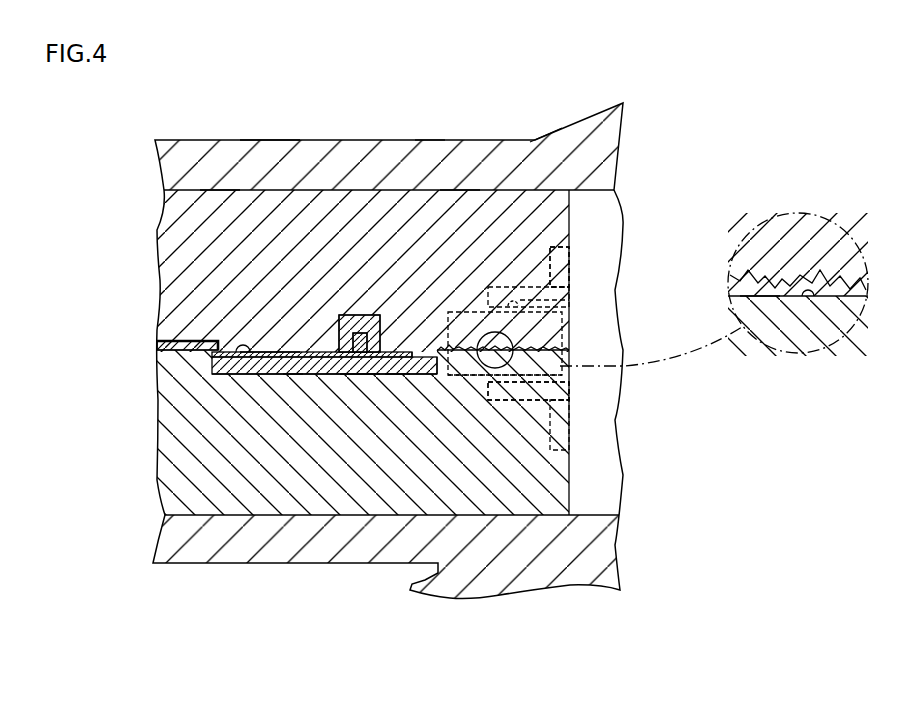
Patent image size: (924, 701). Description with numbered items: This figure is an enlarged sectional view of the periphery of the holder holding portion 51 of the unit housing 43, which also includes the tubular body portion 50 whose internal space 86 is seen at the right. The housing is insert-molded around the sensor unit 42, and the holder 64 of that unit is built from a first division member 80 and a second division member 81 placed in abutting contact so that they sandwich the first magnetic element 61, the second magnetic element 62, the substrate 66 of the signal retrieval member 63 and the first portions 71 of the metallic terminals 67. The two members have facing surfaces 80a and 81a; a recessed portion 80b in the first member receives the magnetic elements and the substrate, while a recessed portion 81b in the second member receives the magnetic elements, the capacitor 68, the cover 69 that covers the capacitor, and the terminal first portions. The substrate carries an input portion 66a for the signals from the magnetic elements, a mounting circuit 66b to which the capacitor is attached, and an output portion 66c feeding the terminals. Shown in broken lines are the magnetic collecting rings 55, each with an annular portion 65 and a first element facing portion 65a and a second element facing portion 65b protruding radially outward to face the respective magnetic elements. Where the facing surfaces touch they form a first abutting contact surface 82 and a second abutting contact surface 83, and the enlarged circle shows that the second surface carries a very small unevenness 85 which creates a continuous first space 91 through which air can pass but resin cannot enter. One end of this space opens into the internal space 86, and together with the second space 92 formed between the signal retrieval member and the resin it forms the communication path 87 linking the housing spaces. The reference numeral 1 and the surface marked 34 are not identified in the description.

The display device 1 is at (320, 643).
The upper surface 34 is at (542, 121).
The sensor unit 42 is at (459, 187).
The unit housing 43 is at (430, 137).
The body portion 50 is at (605, 137).
The holder holding portion 51 is at (270, 150).
The magnetic collecting ring 55 is at (558, 257).
The first magnetic element 61 is at (518, 305).
The second magnetic element 62 is at (540, 294).
The signal retrieval member 63 is at (252, 381).
The holder 64 is at (216, 187).
The annular portion 65 is at (558, 257).
The first element facing portion 65a is at (535, 292).
The second element facing portion 65b is at (540, 412).
The substrate 66 is at (336, 381).
The input portion 66a is at (437, 380).
The mounting circuit 66b is at (223, 336).
The output portion 66c is at (215, 355).
The terminal 67 is at (158, 347).
The capacitor 68 is at (344, 325).
The cover 69 is at (378, 318).
The first portion 71 is at (158, 347).
The first division member 80 is at (515, 503).
The facing surface 80a is at (215, 372).
The recessed portion 80b is at (397, 380).
The second division member 81 is at (498, 205).
The facing surface 81a is at (272, 348).
The recessed portion 81b is at (108, 337).
The first abutting contact surface 82 is at (478, 372).
The second abutting contact surface 83 is at (562, 352).
The unevenness 85 is at (836, 277).
The internal space 86 is at (605, 216).
The communication path 87 is at (362, 381).
The first space 91 is at (866, 293).
The second space 92 is at (300, 378).